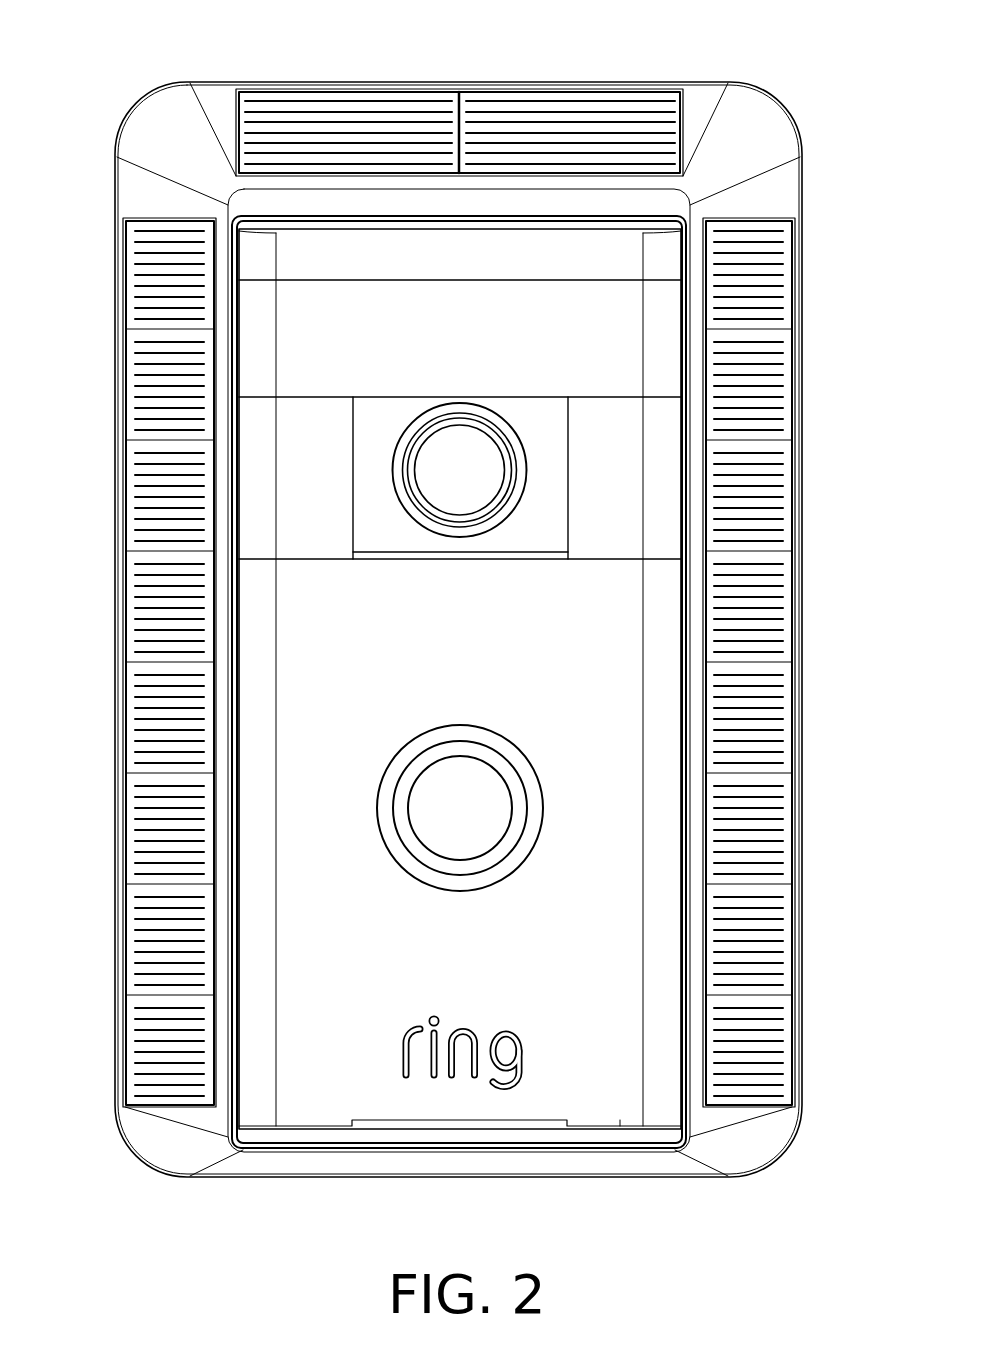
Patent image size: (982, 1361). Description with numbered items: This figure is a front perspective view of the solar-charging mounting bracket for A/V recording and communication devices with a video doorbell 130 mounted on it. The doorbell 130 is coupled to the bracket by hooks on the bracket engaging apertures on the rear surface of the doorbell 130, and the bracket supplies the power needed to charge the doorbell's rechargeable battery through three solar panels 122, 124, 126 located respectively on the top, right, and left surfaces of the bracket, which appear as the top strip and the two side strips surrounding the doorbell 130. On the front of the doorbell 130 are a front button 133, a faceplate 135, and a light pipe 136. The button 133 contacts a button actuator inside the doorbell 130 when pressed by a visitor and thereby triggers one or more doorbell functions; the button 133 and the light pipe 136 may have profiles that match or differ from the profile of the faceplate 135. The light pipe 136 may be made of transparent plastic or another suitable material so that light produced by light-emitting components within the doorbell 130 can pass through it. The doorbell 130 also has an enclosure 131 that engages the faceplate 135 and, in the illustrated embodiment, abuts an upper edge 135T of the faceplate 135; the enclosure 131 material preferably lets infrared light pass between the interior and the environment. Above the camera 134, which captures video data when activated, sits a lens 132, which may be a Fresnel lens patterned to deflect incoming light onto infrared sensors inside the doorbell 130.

The solar panel 122 is at (513, 127).
The solar panel 124 is at (755, 886).
The solar panel 126 is at (165, 870).
The video doorbell 130 is at (610, 1067).
The enclosure 131 is at (657, 480).
The lens 132 is at (318, 334).
The front button 133 is at (444, 800).
The camera 134 is at (440, 490).
The faceplate 135 is at (660, 742).
The upper edge of the faceplate 135T is at (601, 545).
The light pipe 136 is at (496, 858).